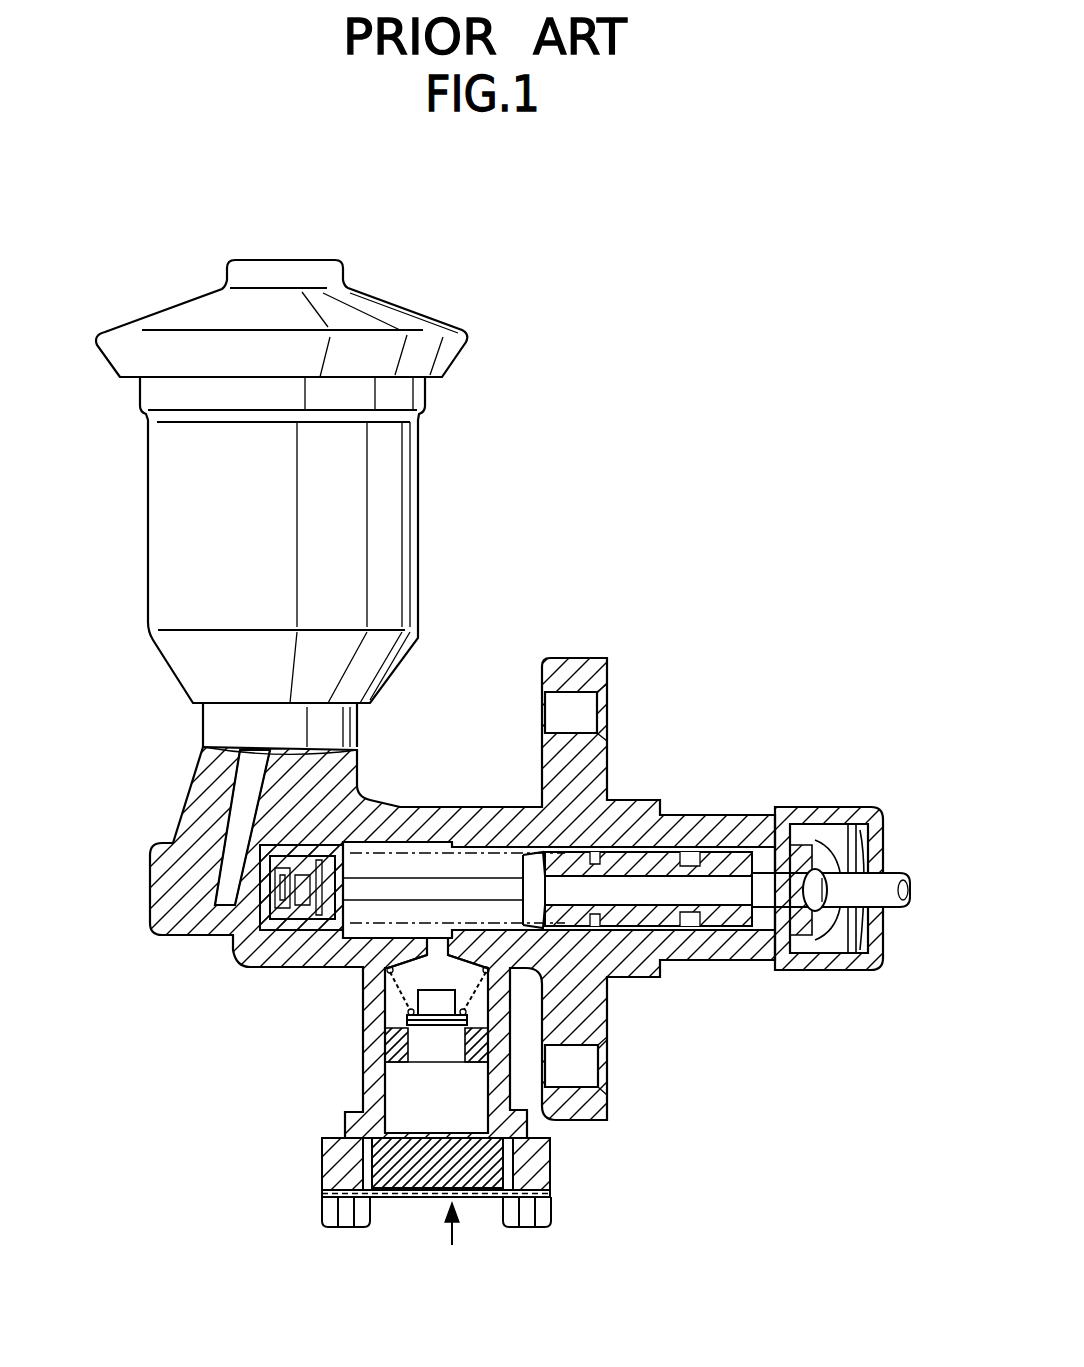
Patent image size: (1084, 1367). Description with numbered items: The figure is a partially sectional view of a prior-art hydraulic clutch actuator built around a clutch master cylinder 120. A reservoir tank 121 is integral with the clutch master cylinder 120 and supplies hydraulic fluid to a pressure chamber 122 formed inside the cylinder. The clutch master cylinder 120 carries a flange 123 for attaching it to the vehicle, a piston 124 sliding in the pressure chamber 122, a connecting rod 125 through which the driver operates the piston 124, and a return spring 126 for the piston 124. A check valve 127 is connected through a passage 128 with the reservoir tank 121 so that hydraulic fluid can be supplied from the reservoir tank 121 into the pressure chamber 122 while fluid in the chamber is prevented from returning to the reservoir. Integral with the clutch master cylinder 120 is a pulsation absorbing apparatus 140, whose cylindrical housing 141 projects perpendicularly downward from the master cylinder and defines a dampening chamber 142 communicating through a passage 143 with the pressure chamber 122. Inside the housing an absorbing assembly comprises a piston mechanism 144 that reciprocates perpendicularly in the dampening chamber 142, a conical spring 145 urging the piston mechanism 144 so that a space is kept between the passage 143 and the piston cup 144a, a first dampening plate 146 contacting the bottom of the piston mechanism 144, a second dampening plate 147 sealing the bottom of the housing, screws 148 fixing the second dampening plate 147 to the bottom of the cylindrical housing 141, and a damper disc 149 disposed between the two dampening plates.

The clutch master cylinder 120 is at (748, 755).
The reservoir tank 121 is at (383, 300).
The pressure chamber 122 is at (308, 962).
The flange 123 is at (573, 668).
The piston 124 is at (718, 915).
The connecting rod 125 is at (892, 868).
The return spring 126 is at (488, 850).
The check valve 127 is at (260, 900).
The passage 128 is at (200, 880).
The pulsation absorbing apparatus 140 is at (452, 1245).
The cylindrical housing 141 is at (362, 1038).
The dampening chamber 142 is at (362, 987).
The passage 143 is at (432, 945).
The piston mechanism 144 is at (427, 1078).
The piston cup 144a is at (480, 1040).
The conical spring 145 is at (480, 992).
The first dampening plate 146 is at (470, 1110).
The second dampening plate 147 is at (410, 1200).
The screws 148 is at (335, 1230).
The damper disc 149 is at (477, 1200).